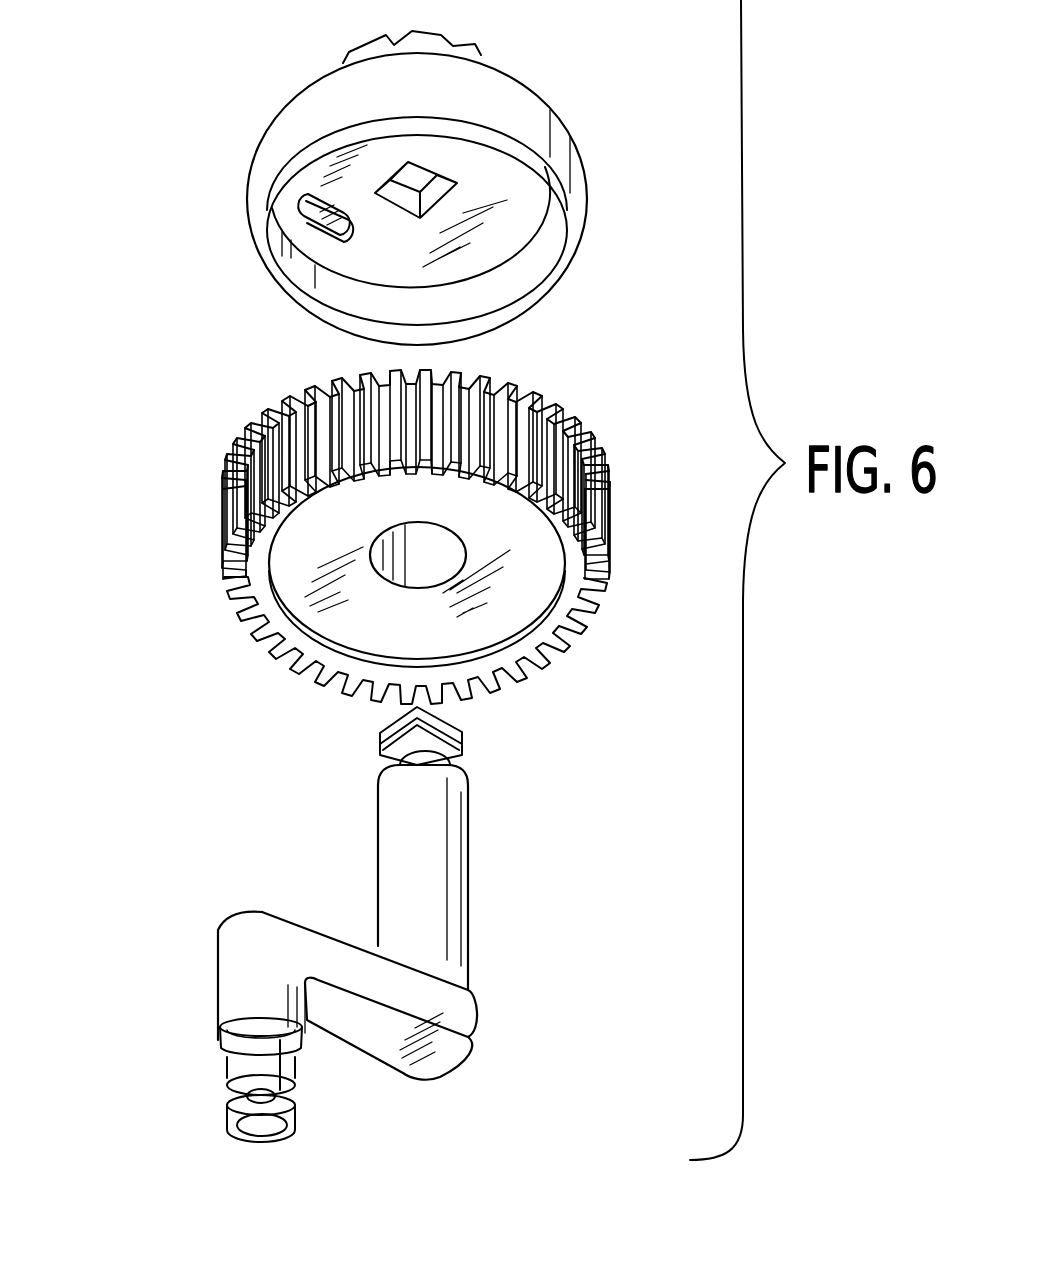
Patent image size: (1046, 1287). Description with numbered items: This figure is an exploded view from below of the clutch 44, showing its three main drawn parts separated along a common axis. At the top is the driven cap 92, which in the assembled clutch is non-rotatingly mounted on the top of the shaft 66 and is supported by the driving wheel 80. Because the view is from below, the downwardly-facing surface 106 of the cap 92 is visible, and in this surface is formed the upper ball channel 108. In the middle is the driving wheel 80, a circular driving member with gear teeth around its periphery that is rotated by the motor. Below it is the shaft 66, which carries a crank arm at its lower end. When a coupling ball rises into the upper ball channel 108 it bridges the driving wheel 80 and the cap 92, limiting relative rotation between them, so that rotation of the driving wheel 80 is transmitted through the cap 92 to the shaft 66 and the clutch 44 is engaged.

The clutch 44 is at (159, 346).
The driven cap 92 is at (586, 157).
The downwardly-facing surface 106 is at (512, 200).
The upper ball channel 108 is at (300, 226).
The driving wheel 80 is at (538, 497).
The shaft 66 is at (415, 855).